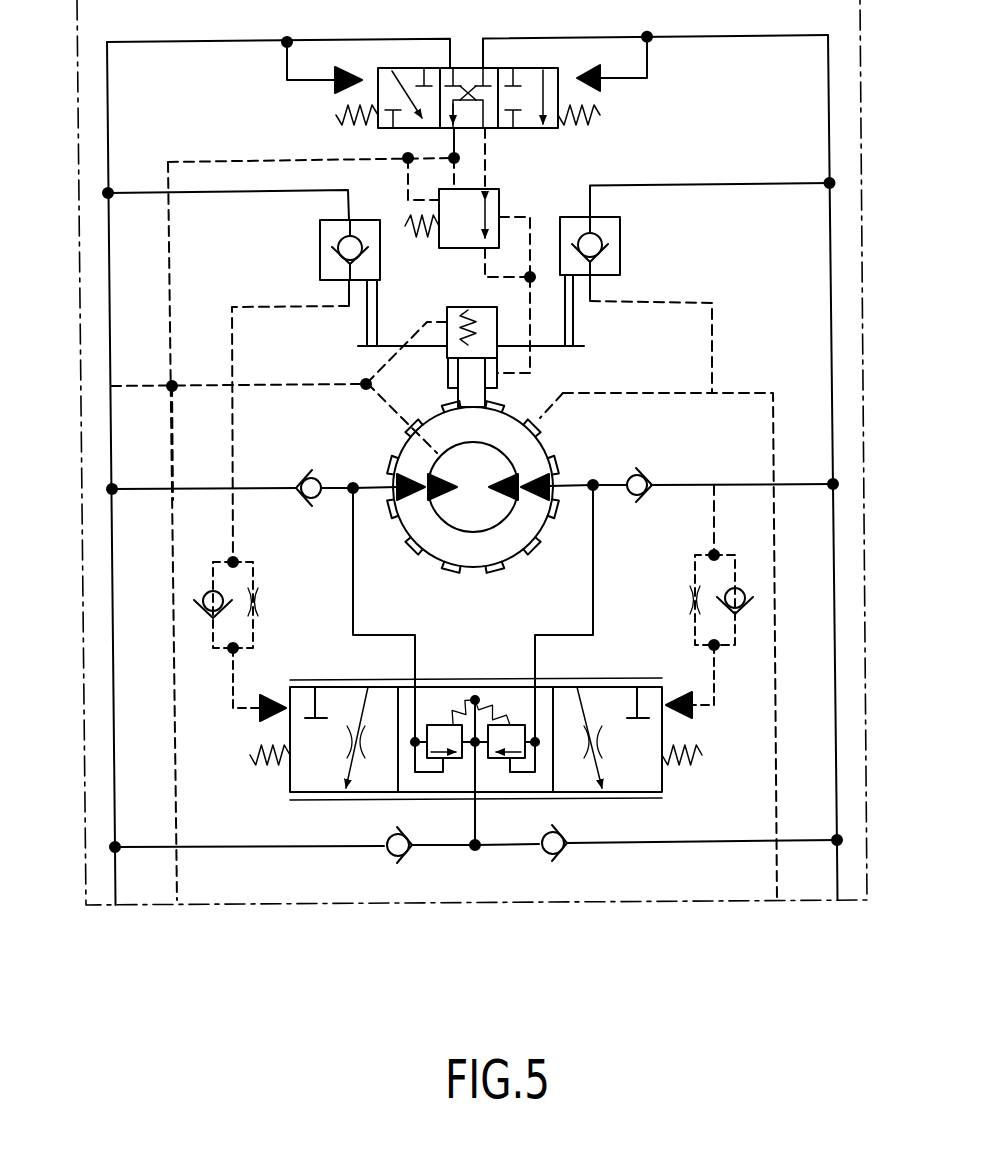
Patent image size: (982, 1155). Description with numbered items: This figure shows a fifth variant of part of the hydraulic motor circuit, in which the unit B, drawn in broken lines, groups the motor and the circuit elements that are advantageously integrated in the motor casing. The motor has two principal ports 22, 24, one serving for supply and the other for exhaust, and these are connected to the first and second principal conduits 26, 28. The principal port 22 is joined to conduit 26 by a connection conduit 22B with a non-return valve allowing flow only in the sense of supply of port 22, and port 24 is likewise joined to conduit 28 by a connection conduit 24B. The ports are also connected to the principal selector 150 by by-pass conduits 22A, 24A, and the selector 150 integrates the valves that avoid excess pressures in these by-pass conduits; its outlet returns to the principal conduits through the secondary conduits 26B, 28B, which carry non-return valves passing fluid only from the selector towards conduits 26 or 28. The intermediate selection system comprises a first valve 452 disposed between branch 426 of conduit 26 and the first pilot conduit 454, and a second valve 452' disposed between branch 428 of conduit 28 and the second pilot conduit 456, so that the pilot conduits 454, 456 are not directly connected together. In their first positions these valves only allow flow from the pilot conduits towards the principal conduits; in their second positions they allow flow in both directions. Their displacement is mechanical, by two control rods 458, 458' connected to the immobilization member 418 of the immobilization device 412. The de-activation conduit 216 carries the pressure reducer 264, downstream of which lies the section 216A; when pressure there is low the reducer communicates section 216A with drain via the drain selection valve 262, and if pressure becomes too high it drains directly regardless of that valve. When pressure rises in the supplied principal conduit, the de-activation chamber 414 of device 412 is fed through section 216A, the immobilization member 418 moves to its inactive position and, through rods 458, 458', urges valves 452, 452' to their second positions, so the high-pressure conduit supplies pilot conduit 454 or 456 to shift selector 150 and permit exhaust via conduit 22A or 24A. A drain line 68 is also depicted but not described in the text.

The drain selection valve 262 is at (614, 104).
The de-activation conduit 216 is at (485, 164).
The pressure reducer 264 is at (513, 201).
The branch of the second principal conduit 428 is at (142, 192).
The branch of the first principal conduit 426 is at (683, 184).
The second valve 452' is at (306, 391).
The first valve 452 is at (622, 258).
The control rod 458' is at (402, 306).
The control rod 458 is at (568, 310).
The section of the de-activation conduit 216A is at (531, 306).
The immobilization device 412 is at (509, 357).
The de-activation chamber 414 is at (447, 372).
The immobilization member 418 is at (476, 378).
The first pilot conduit 454 is at (712, 350).
The second pilot conduit 456 is at (232, 356).
The drain line 68 is at (172, 413).
The connection conduit 24B is at (267, 489).
The connection conduit 22B is at (688, 484).
The principal port 24 is at (372, 485).
The principal port 22 is at (570, 484).
The by-pass conduit 24A is at (354, 584).
The by-pass conduit 22A is at (592, 584).
The principal selector 150 is at (582, 672).
The second principal conduit 28 is at (108, 285).
The first principal conduit 26 is at (830, 240).
The secondary conduit 28B is at (273, 848).
The secondary conduit 26B is at (675, 843).
The unit B is at (868, 322).